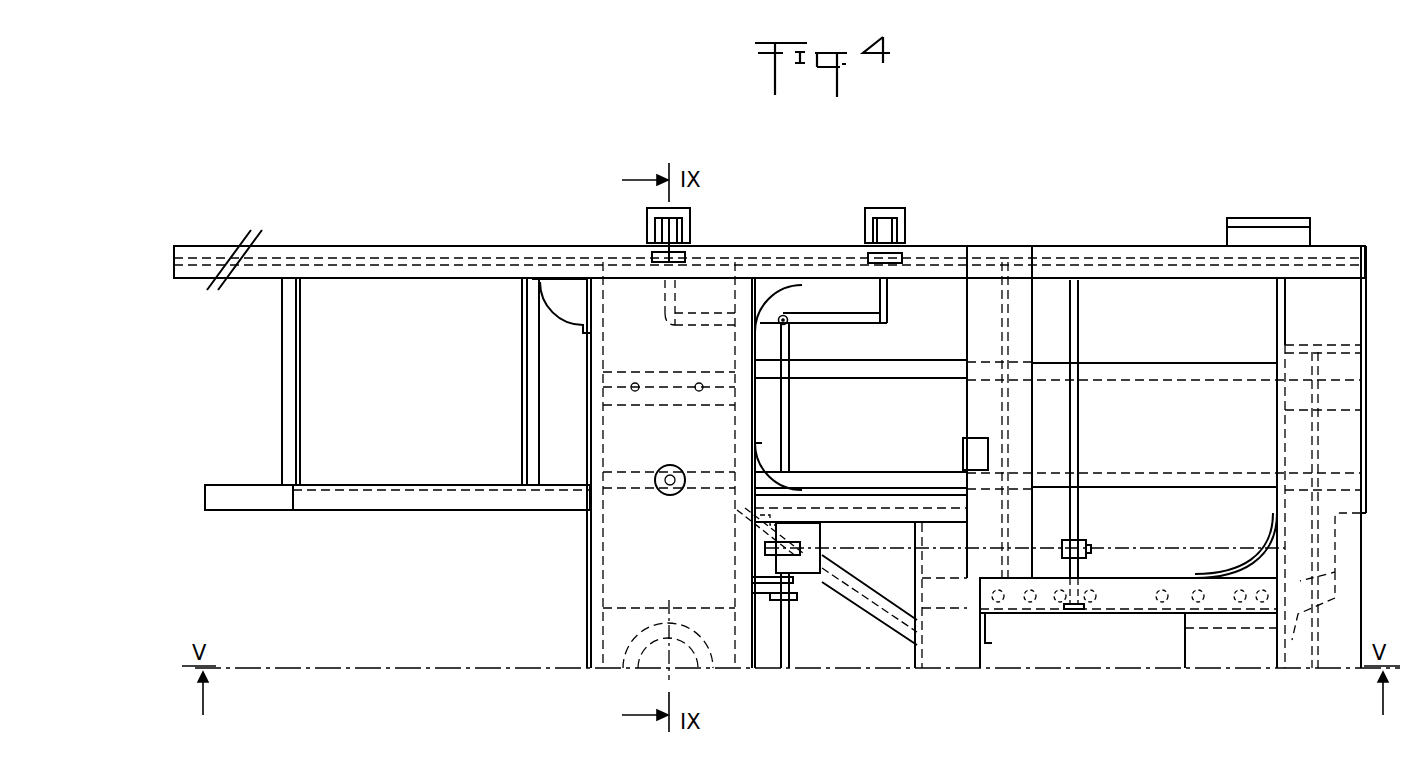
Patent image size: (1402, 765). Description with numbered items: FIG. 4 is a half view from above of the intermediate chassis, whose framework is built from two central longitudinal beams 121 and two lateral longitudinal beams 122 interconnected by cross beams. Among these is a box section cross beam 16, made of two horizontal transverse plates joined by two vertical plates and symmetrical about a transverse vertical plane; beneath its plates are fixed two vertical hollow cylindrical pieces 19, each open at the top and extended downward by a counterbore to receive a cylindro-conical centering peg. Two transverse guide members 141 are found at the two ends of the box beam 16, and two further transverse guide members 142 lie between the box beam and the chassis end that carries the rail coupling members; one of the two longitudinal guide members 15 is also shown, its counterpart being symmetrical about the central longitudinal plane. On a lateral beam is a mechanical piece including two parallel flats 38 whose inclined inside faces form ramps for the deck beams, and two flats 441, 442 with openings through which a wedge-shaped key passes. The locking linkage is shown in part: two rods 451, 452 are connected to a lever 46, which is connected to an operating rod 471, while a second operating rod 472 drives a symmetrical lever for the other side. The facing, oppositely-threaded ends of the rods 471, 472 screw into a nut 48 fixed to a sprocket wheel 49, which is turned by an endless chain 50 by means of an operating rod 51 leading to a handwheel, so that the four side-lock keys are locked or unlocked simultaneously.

The central longitudinal beam 121 is at (446, 495).
The lateral longitudinal beam 122 is at (437, 268).
The transverse guide member 141 is at (698, 229).
The transverse guide member 142 is at (904, 218).
The flat 38 is at (865, 228).
The flat 441 is at (905, 243).
The flat 442 is at (903, 258).
The rod 451 is at (663, 300).
The rod 452 is at (887, 303).
The lever 46 is at (852, 320).
The operating rod 471 is at (790, 433).
The second operating rod 472 is at (787, 658).
The longitudinal guide member 15 is at (963, 448).
The box section cross beam 16 is at (699, 548).
The vertical hollow cylindrical piece 19 is at (670, 470).
The nut 48 is at (793, 565).
The sprocket wheel 49 is at (797, 547).
The endless chain 50 is at (888, 547).
The operating rod 51 is at (1075, 528).